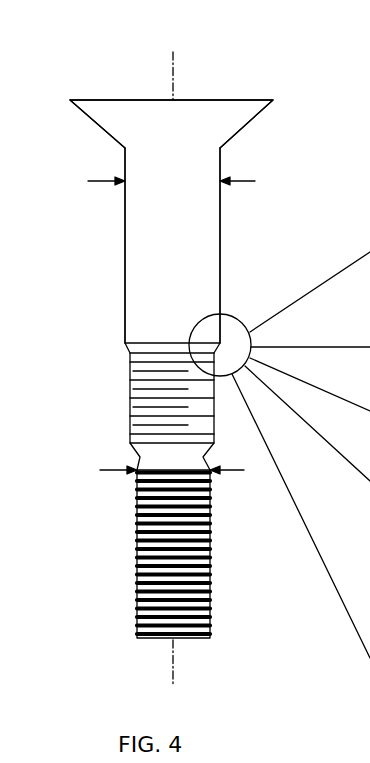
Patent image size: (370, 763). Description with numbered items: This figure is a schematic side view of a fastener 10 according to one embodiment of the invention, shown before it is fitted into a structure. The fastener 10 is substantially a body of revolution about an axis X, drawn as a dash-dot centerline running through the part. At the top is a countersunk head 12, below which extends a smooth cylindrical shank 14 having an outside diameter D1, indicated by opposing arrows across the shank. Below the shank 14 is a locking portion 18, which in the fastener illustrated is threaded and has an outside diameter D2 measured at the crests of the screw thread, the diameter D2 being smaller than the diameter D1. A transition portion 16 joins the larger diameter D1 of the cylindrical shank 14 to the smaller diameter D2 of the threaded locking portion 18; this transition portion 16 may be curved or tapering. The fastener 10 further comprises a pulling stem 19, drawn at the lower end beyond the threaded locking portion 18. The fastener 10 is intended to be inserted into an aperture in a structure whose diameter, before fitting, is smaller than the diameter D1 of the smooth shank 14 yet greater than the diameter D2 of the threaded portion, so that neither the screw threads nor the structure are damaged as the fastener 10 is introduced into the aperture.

The fastener 10 is at (262, 72).
The countersunk head 12 is at (95, 100).
The smooth cylindrical shank 14 is at (125, 248).
The transition portion 16 is at (152, 345).
The locking portion 18 is at (130, 381).
The pulling stem 19 is at (137, 592).
The axis X is at (173, 92).
The outside diameter of the smooth cylindrical shank D1 is at (193, 184).
The outside diameter of the threaded locking portion D2 is at (153, 449).